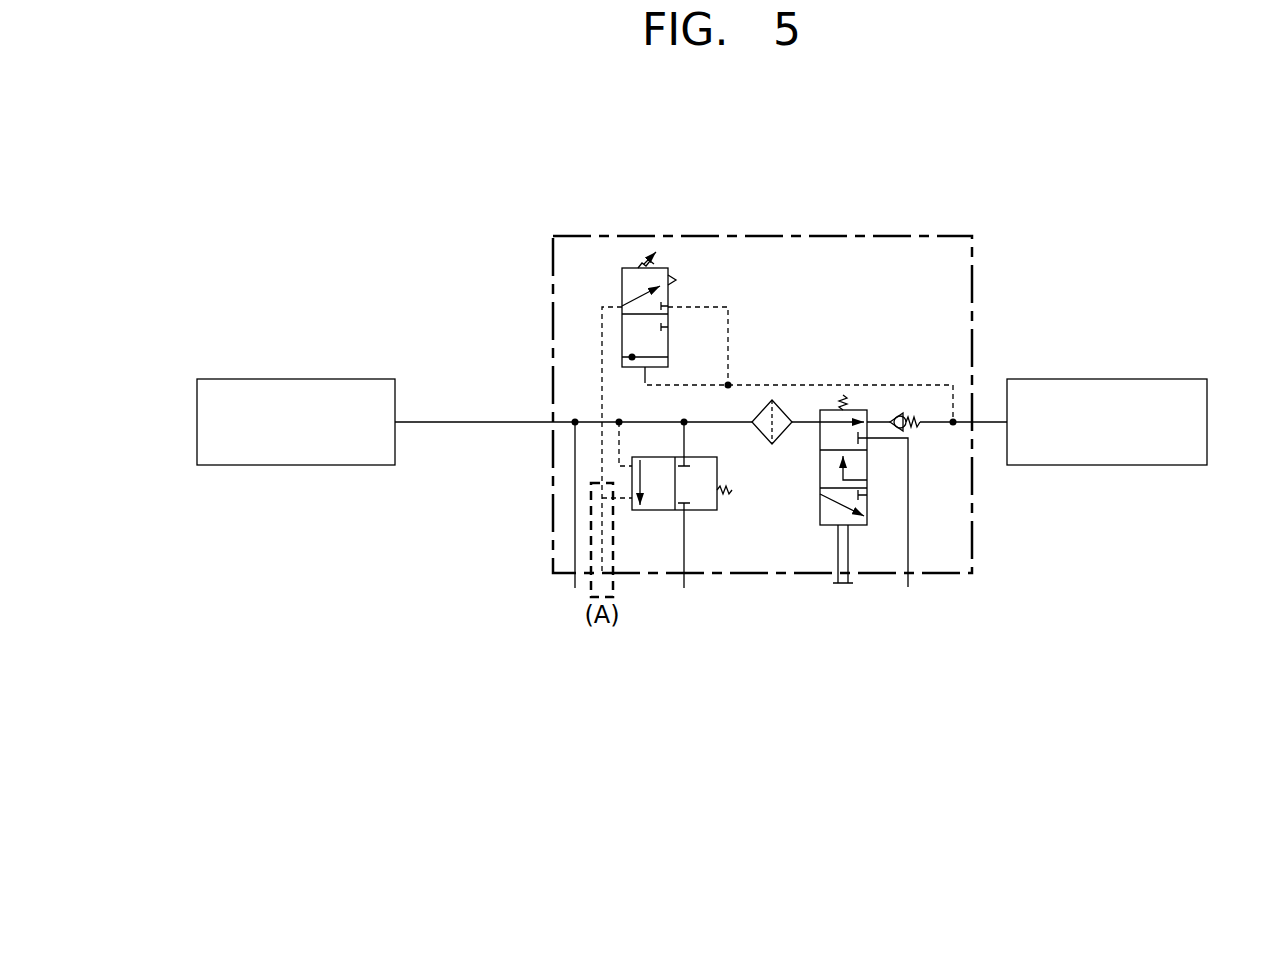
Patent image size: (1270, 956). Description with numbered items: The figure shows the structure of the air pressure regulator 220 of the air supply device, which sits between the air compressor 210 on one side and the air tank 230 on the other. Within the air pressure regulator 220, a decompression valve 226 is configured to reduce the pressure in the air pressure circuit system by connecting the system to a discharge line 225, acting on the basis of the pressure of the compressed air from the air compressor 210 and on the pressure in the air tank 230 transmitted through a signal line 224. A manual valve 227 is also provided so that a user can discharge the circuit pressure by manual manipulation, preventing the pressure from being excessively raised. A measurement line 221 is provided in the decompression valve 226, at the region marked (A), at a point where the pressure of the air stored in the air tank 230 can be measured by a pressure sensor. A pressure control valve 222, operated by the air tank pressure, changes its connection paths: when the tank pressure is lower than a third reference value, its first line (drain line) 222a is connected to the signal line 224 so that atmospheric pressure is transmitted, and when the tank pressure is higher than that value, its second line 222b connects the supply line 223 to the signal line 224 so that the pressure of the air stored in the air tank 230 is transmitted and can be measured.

The air compressor 210 is at (296, 378).
The air pressure regulator 220 is at (886, 208).
The measurement line 221 is at (590, 538).
The pressure control valve 222 is at (614, 289).
The first line (drain line) 222a is at (649, 286).
The second line 222b is at (663, 349).
The supply line 223 is at (716, 381).
The signal line 224 is at (600, 364).
The discharge line 225 is at (677, 546).
The decompression valve 226 is at (717, 514).
The manual valve 227 is at (866, 530).
The air tank 230 is at (1107, 378).